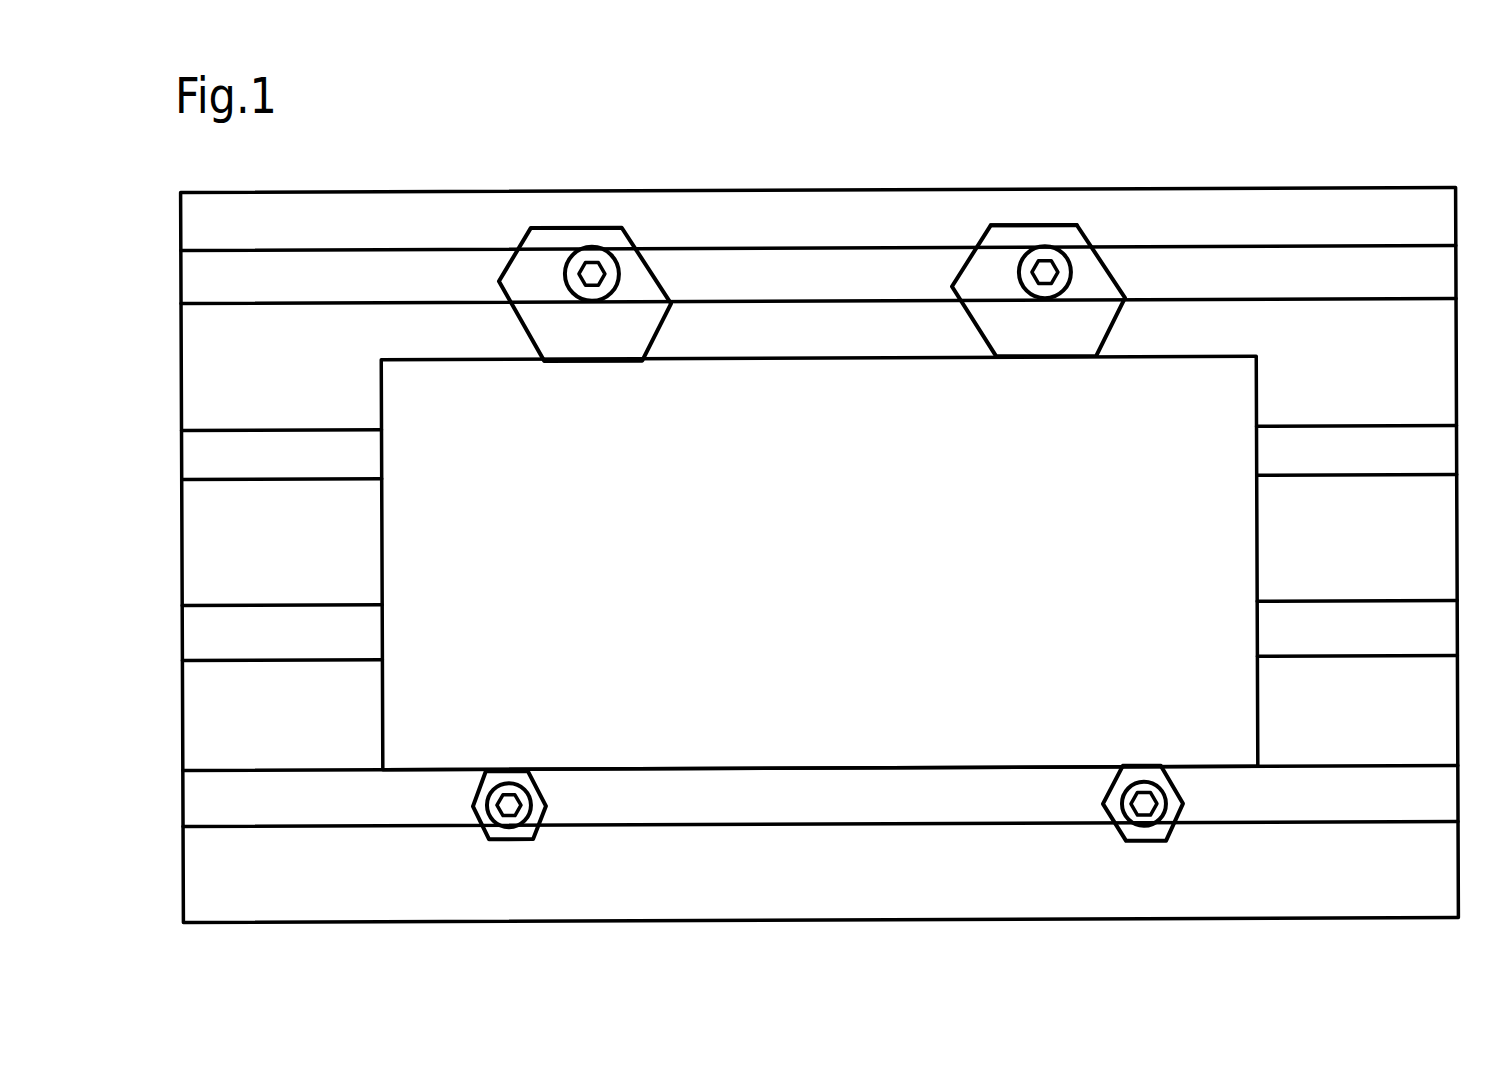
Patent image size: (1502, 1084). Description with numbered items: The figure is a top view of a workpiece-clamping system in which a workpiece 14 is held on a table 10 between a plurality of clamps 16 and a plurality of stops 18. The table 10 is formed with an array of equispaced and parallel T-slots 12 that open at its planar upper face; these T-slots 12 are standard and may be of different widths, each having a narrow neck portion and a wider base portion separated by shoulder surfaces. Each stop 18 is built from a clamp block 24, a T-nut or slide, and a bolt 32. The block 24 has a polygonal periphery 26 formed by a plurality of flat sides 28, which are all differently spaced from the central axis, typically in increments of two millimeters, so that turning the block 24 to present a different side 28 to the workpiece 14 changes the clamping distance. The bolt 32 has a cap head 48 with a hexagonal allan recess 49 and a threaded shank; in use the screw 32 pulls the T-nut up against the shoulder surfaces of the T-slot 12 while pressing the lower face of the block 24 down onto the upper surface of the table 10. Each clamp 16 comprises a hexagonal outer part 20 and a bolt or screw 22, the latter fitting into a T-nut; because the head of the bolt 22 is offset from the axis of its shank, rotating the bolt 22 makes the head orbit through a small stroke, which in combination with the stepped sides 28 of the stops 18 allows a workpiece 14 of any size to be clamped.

The table 10 is at (410, 218).
The T-slots 12 is at (1417, 283).
The workpiece 14 is at (568, 548).
The clamps 16 is at (1158, 782).
The stops 18 is at (1028, 255).
The outer part 20 is at (1132, 790).
The bolt or screw 22 is at (1123, 800).
The clamp block 24 is at (1080, 257).
The polygonal periphery 26 is at (1002, 222).
The flat sides 28 is at (1060, 257).
The bolt 32 is at (1020, 276).
The cap head 48 is at (585, 255).
The hexagonal allan recess 49 is at (597, 268).